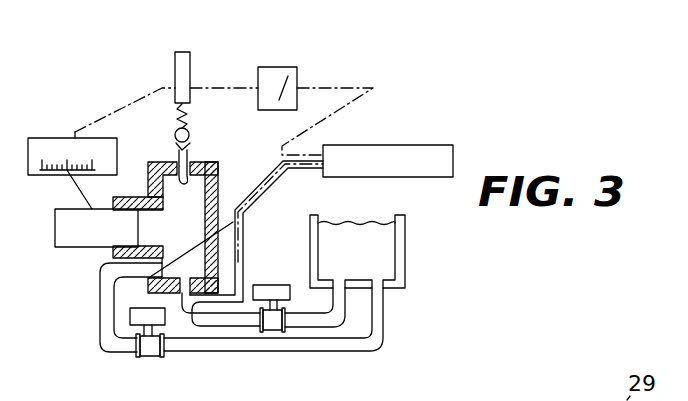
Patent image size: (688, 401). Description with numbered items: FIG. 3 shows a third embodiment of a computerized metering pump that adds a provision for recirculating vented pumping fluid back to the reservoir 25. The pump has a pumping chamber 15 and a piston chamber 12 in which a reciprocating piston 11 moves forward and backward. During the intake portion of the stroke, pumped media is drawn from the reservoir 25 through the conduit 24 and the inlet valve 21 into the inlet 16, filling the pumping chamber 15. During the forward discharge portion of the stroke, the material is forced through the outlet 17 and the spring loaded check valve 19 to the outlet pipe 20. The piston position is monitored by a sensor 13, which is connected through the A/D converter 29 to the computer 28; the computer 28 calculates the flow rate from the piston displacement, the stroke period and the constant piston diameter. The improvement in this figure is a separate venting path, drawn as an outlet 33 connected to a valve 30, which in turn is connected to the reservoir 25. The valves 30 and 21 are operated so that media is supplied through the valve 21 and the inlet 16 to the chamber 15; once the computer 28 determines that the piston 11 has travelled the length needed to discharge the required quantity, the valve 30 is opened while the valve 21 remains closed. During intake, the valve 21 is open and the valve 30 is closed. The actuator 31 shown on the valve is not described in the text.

The piston 11 is at (92, 233).
The piston chamber 12 is at (138, 198).
The sensor 13 is at (58, 138).
The pumping chamber 15 is at (198, 233).
The inlet 16 is at (238, 257).
The outlet 17 is at (178, 177).
The spring loaded check valve 19 is at (192, 146).
The outlet pipe 20 is at (190, 80).
The valve 21 is at (280, 333).
The conduit 24 is at (357, 297).
The reservoir 25 is at (378, 263).
The computer 28 is at (387, 146).
The A/D converter 29 is at (275, 67).
The valve 30 is at (150, 358).
The valve actuator 31 is at (133, 312).
The outlet 33 is at (236, 220).